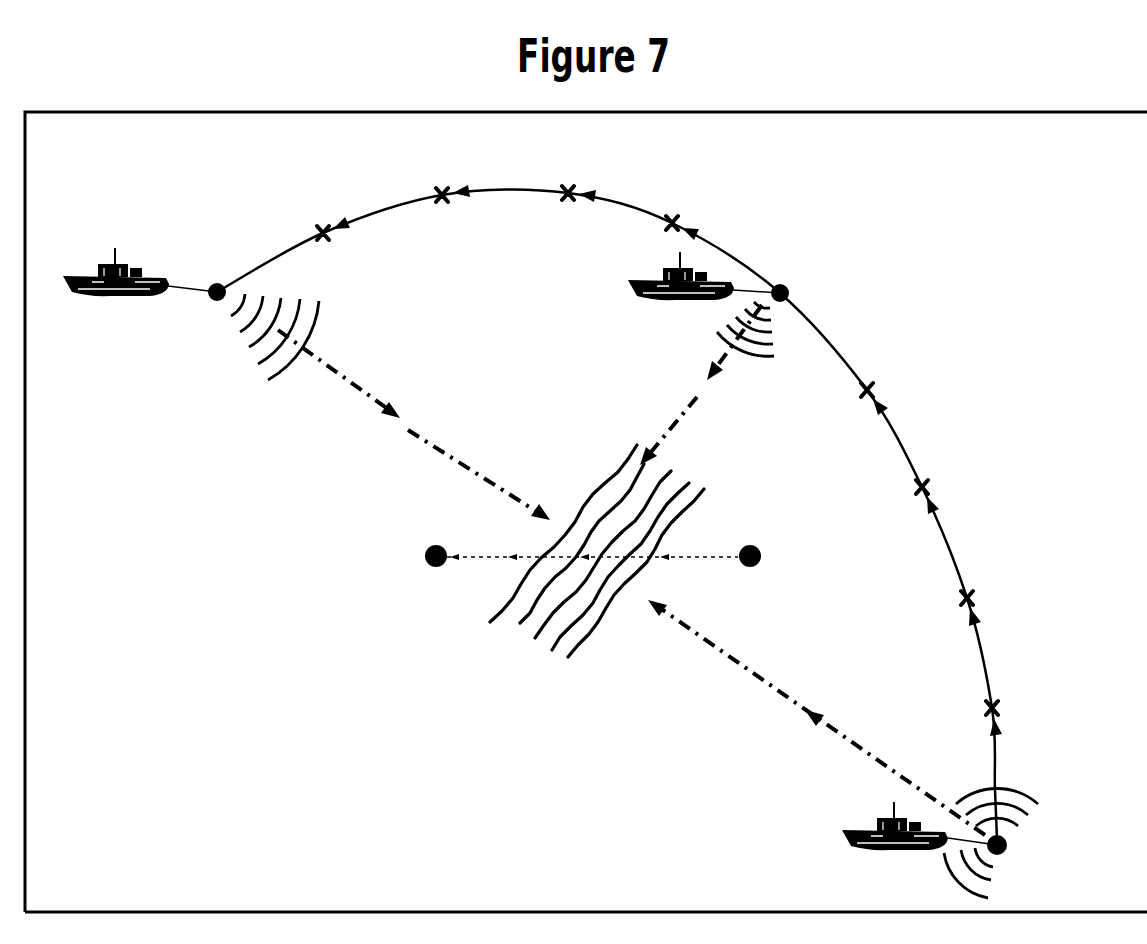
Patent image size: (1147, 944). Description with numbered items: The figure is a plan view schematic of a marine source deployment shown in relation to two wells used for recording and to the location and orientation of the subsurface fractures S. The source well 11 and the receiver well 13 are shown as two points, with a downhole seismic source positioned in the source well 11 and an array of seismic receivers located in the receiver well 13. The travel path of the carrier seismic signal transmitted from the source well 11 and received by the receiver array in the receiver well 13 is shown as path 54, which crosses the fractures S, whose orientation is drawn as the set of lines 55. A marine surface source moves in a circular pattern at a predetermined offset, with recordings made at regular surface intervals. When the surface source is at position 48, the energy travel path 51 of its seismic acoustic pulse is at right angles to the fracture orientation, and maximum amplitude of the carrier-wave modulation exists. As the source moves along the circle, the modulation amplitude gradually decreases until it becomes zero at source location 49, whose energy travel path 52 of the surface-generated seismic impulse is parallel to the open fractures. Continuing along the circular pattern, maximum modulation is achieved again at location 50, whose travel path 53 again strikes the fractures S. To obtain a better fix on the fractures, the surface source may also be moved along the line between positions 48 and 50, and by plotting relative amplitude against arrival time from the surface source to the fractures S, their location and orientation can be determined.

The source well 11 is at (762, 541).
The receiver well 13 is at (422, 570).
The marine surface source position 48 is at (944, 843).
The source location 49 is at (727, 304).
The source location 50 is at (191, 314).
The energy travel path from position 48 51 is at (816, 717).
The energy travel path of surface generated seismic impulse 52 is at (701, 385).
The energy travel path from location 50 53 is at (414, 425).
The travel path of carrier seismic signal 54 is at (592, 574).
The orientation of the fractures 55 is at (597, 570).
The fractures S is at (530, 628).